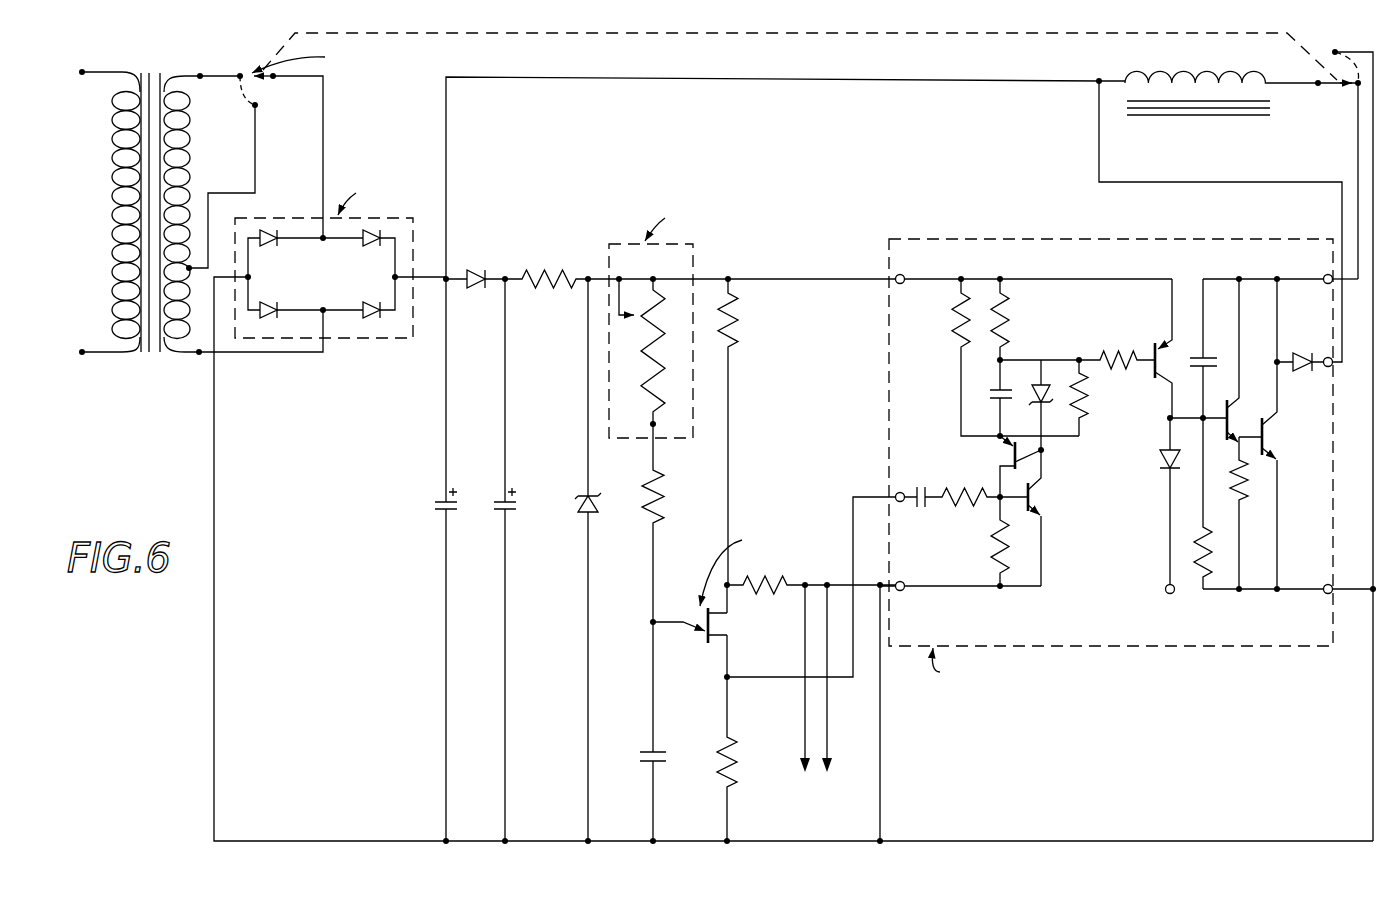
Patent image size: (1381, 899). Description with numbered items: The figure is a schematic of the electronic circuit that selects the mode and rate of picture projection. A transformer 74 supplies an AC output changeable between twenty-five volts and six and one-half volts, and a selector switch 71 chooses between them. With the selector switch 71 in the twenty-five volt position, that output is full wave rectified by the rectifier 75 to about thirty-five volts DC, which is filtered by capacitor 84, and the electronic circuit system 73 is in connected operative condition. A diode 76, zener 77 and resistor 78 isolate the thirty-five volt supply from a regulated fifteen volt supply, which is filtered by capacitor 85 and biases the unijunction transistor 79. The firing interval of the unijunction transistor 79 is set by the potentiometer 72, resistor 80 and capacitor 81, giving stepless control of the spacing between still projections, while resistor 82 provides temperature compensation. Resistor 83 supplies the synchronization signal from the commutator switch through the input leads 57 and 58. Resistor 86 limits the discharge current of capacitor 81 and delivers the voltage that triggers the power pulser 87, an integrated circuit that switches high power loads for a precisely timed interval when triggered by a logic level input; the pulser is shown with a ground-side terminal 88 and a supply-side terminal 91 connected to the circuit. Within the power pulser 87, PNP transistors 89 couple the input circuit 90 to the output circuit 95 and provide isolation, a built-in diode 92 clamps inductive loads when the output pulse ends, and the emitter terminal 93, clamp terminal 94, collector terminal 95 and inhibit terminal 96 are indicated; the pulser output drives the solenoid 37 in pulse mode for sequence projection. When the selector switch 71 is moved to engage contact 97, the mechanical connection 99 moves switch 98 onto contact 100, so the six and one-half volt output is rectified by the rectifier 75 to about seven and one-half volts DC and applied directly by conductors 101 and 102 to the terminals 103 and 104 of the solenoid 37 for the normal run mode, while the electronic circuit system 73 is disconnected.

The transformer 74 is at (158, 68).
The contact 97 is at (255, 107).
The selector switch 71 is at (263, 80).
The mechanical connection 99 is at (928, 37).
The rectifier 75 is at (388, 270).
The conductor 102 is at (968, 841).
The conductor 101 is at (670, 55).
The diode 76 is at (458, 275).
The resistor 78 is at (538, 270).
The electronic circuit system 73 is at (846, 258).
The potentiometer 72 is at (690, 265).
The resistor 82 is at (747, 316).
The capacitor 84 is at (433, 513).
The capacitor 85 is at (484, 510).
The zener 77 is at (578, 500).
The resistor 80 is at (660, 516).
The unijunction transistor 79 is at (705, 643).
The capacitor 81 is at (645, 759).
The resistor 83 is at (781, 577).
The input lead 57 is at (800, 742).
The input lead 58 is at (827, 735).
The resistor 86 is at (744, 752).
The terminal 88 is at (904, 583).
The power pulser 87 is at (1138, 624).
The terminal 91 is at (906, 277).
The input circuit 90 is at (905, 493).
The diode 92 is at (1052, 372).
The PNP transistors 89 is at (1007, 450).
The inhibit terminal 96 is at (1174, 594).
The output circuit (collector terminal) 95 is at (1327, 275).
The clamp terminal 94 is at (1327, 368).
The emitter terminal 93 is at (1327, 585).
The solenoid 37 is at (1216, 72).
The terminal 103 is at (1126, 53).
The terminal 104 is at (1316, 89).
The switch 98 is at (1352, 88).
The contact 100 is at (1337, 50).